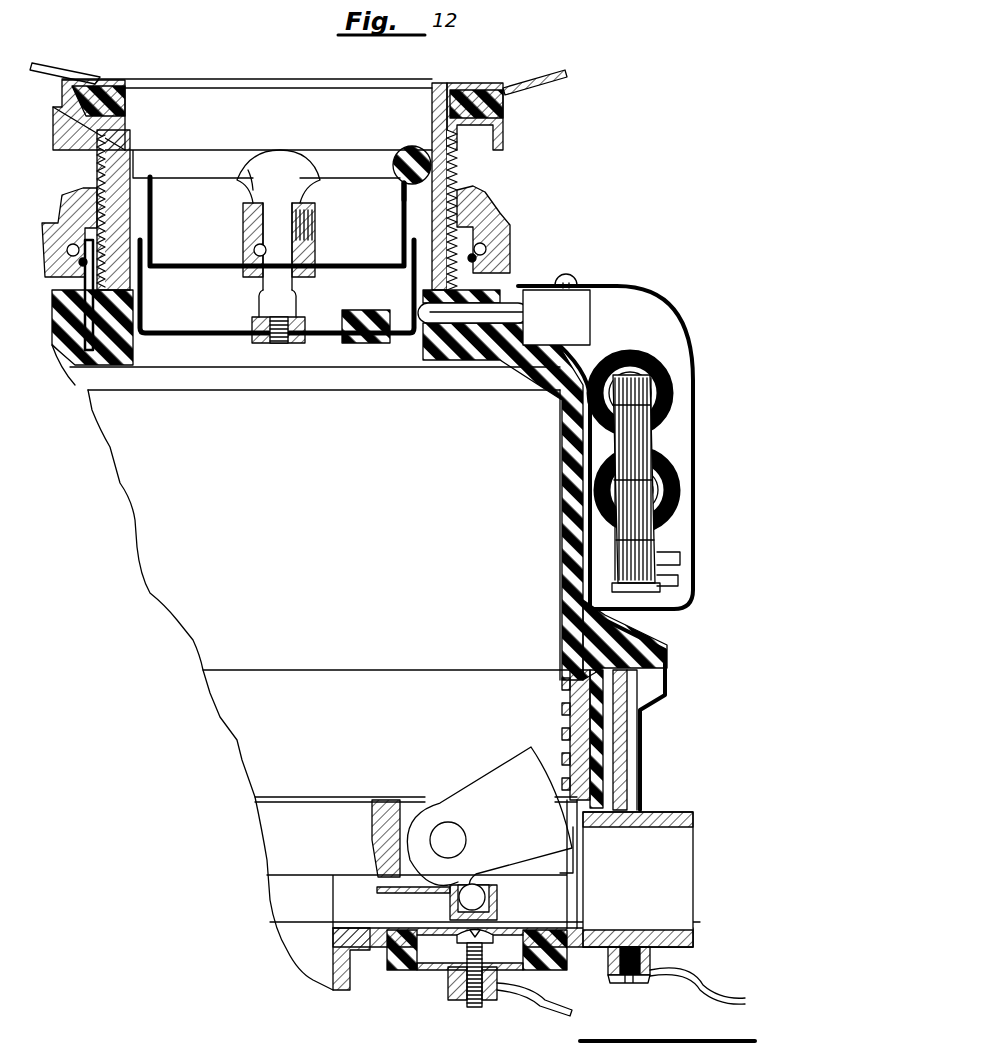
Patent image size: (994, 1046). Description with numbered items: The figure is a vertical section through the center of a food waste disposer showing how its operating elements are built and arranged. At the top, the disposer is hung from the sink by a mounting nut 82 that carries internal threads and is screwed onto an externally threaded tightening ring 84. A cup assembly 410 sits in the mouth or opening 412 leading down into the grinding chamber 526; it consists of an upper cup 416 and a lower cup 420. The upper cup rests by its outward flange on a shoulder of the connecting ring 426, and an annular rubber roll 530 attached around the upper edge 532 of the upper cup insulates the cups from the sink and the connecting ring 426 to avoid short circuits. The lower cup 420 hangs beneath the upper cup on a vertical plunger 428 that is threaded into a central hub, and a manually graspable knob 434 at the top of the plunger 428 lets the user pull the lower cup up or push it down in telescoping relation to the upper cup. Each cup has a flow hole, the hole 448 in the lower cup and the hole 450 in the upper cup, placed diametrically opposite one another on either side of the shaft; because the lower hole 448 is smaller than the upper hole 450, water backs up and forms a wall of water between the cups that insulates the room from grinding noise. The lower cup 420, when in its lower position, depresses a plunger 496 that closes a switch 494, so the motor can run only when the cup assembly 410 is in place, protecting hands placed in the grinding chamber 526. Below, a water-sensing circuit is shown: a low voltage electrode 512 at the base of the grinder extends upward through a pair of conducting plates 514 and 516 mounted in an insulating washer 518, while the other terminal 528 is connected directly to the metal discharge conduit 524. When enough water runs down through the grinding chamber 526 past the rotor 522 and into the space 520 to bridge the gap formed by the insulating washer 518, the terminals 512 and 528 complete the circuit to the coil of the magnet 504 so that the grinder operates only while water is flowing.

The mouth or opening 412 is at (238, 89).
The connecting ring 426 is at (447, 86).
The cup assembly 410 is at (289, 163).
The annular rubber roll 530 is at (405, 152).
The upper edge of the upper cup 532 is at (414, 152).
The knob 434 is at (252, 168).
The tightening ring 84 is at (458, 172).
The mounting nut 82 is at (507, 226).
The upper cup 416 is at (322, 266).
The hole in the upper cup 450 is at (364, 270).
The plunger 496 is at (500, 310).
The switch 494 is at (580, 298).
The magnet 504 is at (675, 365).
The hole in the lower cup 448 is at (192, 328).
The plunger 428 is at (295, 302).
The lower cup 420 is at (406, 332).
The grinding chamber 526 is at (441, 616).
The rotor 522 is at (394, 800).
The metal discharge conduit 524 is at (695, 895).
The conducting plate 516 is at (409, 932).
The insulating washer 518 is at (540, 934).
The space 520 is at (388, 965).
The conducting plate 514 is at (430, 969).
The low voltage electrode 512 is at (474, 1006).
The terminal 528 is at (636, 985).